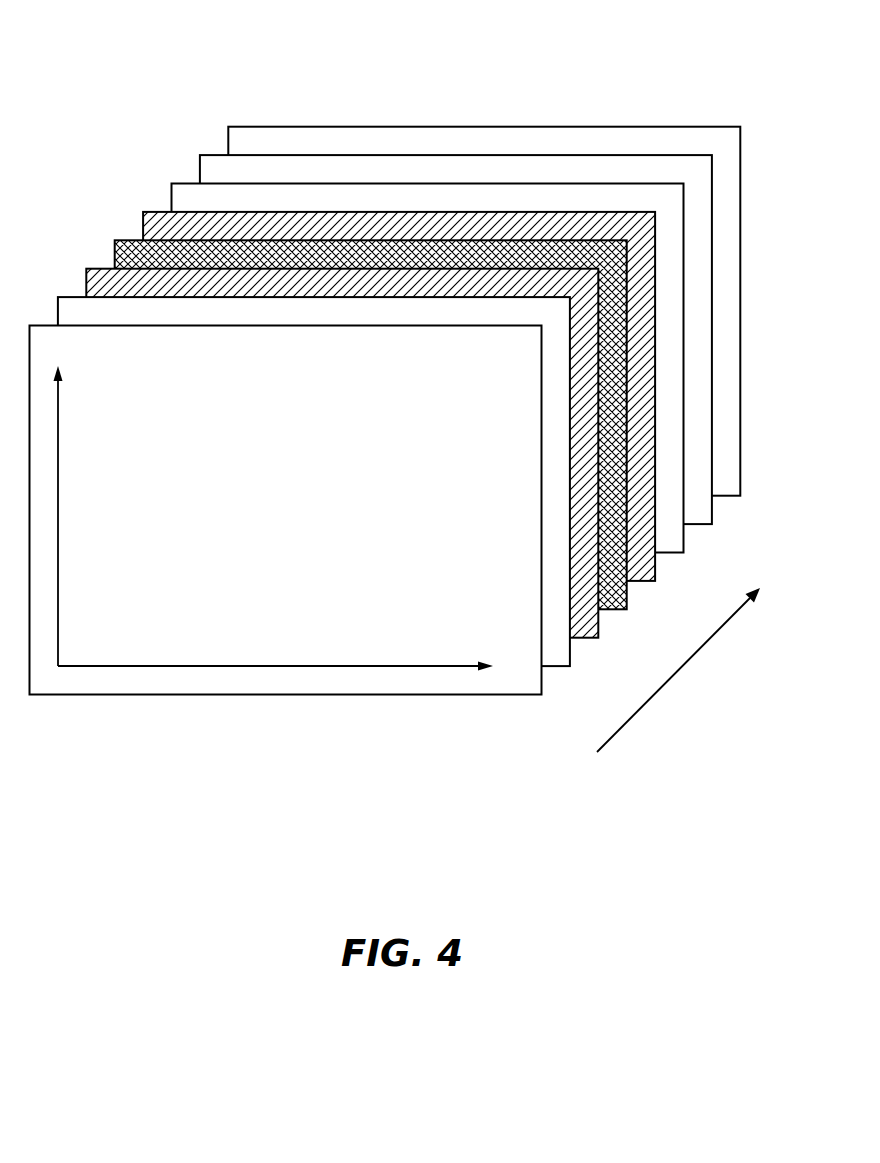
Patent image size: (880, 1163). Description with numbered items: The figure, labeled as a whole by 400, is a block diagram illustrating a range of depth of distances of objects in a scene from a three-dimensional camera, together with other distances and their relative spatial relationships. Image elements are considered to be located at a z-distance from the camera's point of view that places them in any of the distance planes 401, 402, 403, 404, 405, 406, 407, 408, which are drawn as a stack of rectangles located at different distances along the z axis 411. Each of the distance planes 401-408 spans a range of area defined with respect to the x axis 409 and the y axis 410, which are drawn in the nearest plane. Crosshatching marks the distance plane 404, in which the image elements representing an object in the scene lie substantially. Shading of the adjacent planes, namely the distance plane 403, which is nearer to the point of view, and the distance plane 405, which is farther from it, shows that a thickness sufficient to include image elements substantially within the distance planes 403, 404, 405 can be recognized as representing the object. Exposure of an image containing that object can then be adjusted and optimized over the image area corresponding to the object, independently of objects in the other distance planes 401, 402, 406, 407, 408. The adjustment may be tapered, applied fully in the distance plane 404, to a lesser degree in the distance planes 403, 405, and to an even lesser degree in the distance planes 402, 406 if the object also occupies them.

The light field display stack 400 is at (121, 40).
The distance plane 401 is at (468, 698).
The distance plane 402 is at (556, 670).
The distance plane 403 is at (584, 641).
The distance plane 404 is at (613, 613).
The distance plane 405 is at (641, 584).
The distance plane 406 is at (670, 556).
The distance plane 407 is at (698, 527).
The distance plane 408 is at (726, 499).
The x axis 409 is at (285, 662).
The y axis 410 is at (58, 494).
The z axis 411 is at (690, 661).